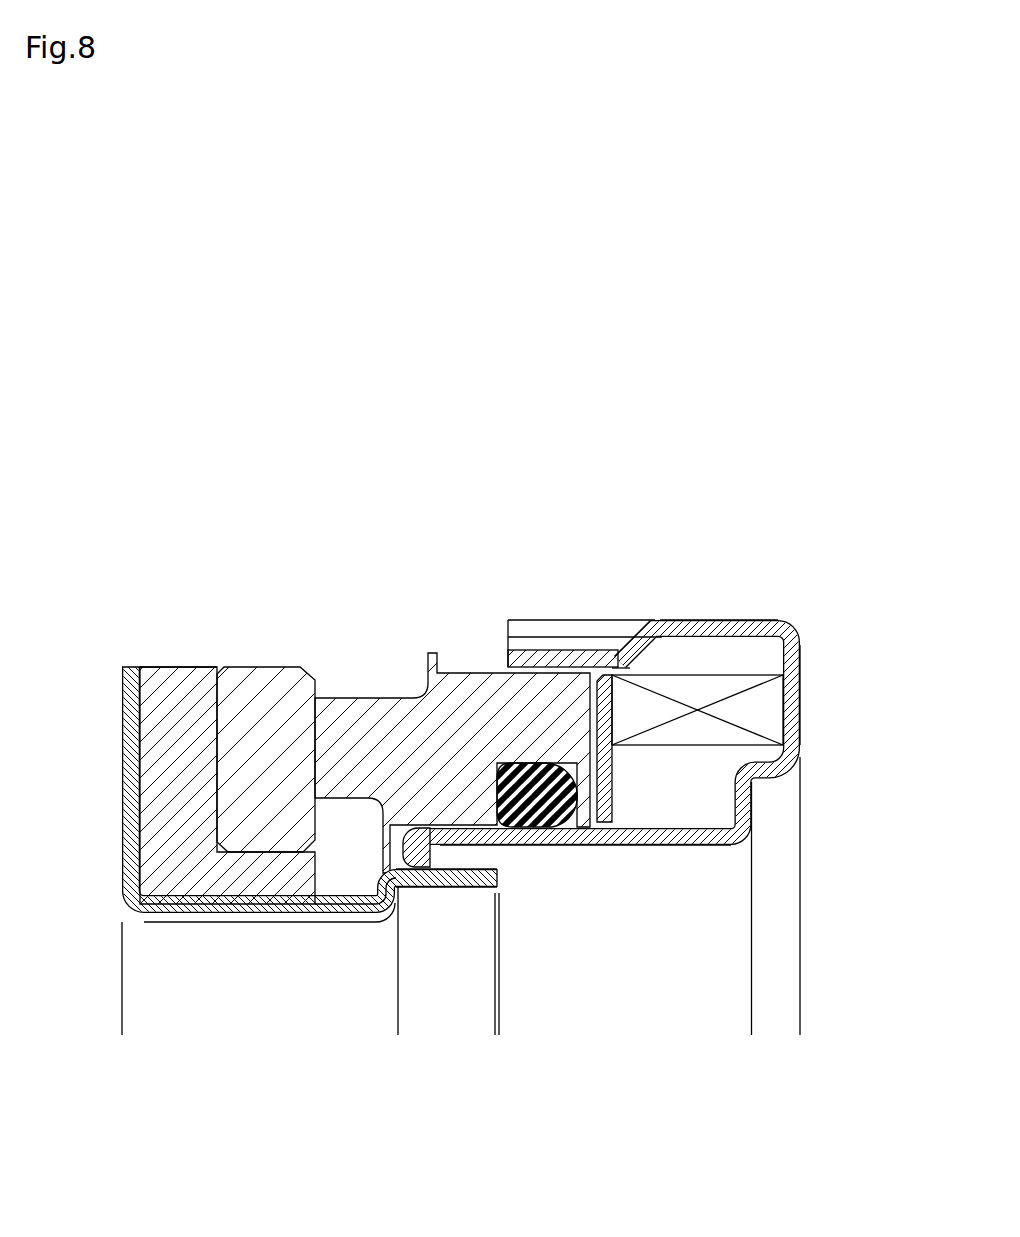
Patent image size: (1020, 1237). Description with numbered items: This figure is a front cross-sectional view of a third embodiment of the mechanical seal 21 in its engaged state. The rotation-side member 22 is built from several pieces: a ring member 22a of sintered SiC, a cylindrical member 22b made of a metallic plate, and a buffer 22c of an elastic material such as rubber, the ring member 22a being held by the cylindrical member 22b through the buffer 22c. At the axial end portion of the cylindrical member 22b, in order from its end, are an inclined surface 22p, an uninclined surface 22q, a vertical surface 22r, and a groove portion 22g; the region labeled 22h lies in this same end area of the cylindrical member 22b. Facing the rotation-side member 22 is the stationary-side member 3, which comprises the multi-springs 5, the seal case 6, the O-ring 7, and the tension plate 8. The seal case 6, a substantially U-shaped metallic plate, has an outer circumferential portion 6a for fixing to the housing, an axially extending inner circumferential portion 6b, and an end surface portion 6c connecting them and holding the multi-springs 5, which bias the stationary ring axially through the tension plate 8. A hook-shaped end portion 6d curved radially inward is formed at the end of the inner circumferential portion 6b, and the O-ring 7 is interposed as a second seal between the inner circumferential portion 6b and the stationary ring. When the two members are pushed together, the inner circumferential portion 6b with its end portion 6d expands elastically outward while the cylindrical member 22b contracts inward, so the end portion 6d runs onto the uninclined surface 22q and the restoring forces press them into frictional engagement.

The mechanical seal 21 is at (666, 478).
The rotation-side member 22 is at (181, 650).
The ring member 22a is at (258, 692).
The cylindrical member 22b is at (228, 915).
The buffer 22c is at (170, 780).
The groove portion 22g is at (367, 918).
The recess 22h is at (333, 905).
The inclined surface 22p is at (480, 867).
The uninclined surface 22q is at (447, 890).
The vertical surface 22r is at (368, 905).
The stationary-side member 3 is at (581, 603).
The multi-springs 5 is at (690, 697).
The seal case 6 is at (873, 583).
The outer circumferential portion 6a is at (723, 625).
The inner circumferential portion 6b is at (657, 840).
The end surface portion 6c is at (801, 694).
The end portion 6d is at (418, 853).
The O-ring 7 is at (536, 785).
The tension plate 8 is at (603, 717).